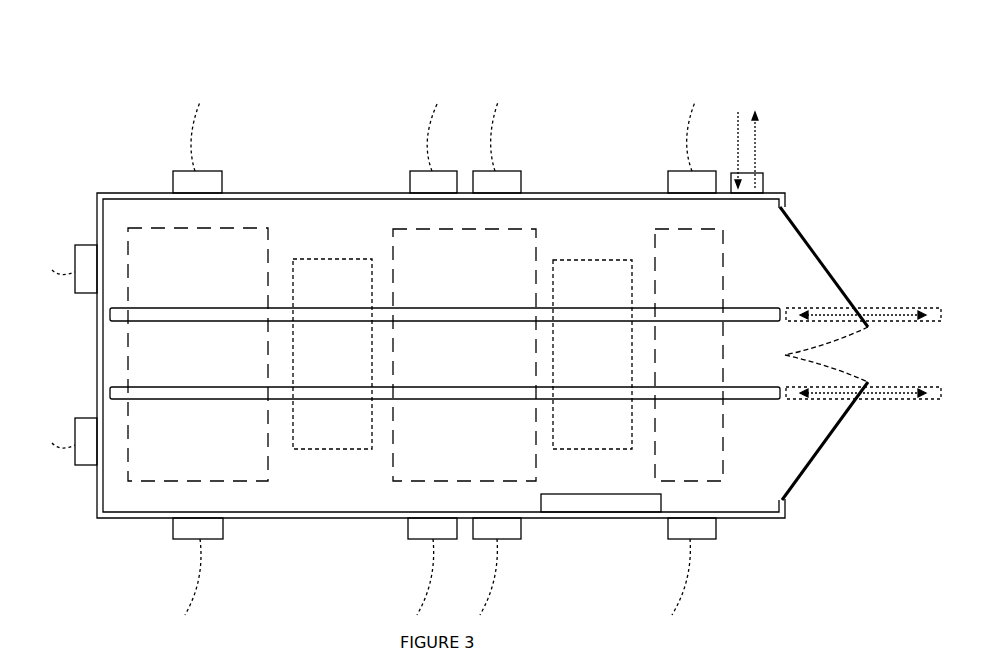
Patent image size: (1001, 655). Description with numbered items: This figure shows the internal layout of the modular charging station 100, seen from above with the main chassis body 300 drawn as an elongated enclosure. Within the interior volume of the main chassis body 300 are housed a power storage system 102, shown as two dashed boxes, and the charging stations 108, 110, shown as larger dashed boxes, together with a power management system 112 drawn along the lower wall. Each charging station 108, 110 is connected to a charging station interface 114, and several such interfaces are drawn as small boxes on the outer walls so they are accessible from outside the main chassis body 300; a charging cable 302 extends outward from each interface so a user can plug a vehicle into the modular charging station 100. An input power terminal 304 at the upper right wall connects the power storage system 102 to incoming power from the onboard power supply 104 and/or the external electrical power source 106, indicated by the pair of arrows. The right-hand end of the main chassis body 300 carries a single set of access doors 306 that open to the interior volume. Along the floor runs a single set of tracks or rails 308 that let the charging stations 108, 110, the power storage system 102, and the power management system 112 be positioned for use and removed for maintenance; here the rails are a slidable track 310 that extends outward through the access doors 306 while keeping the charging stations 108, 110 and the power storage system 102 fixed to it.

The modular charging station 100 is at (322, 78).
The power storage system 102 is at (312, 259).
The onboard power supply 104 is at (751, 140).
The external electrical power source 106 is at (755, 150).
The charging station 108 is at (410, 481).
The charging station 110 is at (717, 480).
The power management system 112 is at (590, 505).
The charging station interface 114 is at (176, 186).
The main chassis body 300 is at (134, 519).
The charging cable 302 is at (195, 106).
The input power terminal 304 is at (764, 185).
The access doors 306 is at (810, 240).
The tracks or rails 308 is at (748, 400).
The slidable track 310 is at (845, 310).